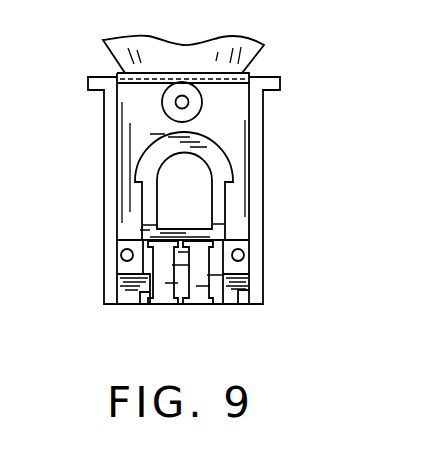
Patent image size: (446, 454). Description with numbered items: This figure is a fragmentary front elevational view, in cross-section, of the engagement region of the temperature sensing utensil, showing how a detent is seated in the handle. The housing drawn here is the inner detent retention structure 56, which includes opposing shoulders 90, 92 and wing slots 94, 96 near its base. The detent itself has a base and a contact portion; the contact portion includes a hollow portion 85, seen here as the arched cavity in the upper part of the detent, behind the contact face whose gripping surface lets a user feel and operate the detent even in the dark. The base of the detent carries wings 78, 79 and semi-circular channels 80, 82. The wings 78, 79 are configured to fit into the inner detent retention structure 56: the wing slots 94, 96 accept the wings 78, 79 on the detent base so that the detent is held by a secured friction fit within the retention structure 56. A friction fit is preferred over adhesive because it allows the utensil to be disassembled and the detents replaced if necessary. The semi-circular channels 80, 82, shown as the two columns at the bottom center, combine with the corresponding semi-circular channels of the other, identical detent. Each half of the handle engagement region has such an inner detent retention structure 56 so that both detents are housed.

The inner detent retention structure 56 is at (254, 243).
The hollow portion 85 is at (168, 193).
The shoulder 90 is at (121, 266).
The shoulder 92 is at (244, 266).
The wing 79 is at (118, 281).
The wing 78 is at (247, 283).
The wing slot 94 is at (131, 304).
The wing slot 96 is at (247, 304).
The semi-circular channel 82 is at (165, 290).
The semi-circular channel 80 is at (198, 290).